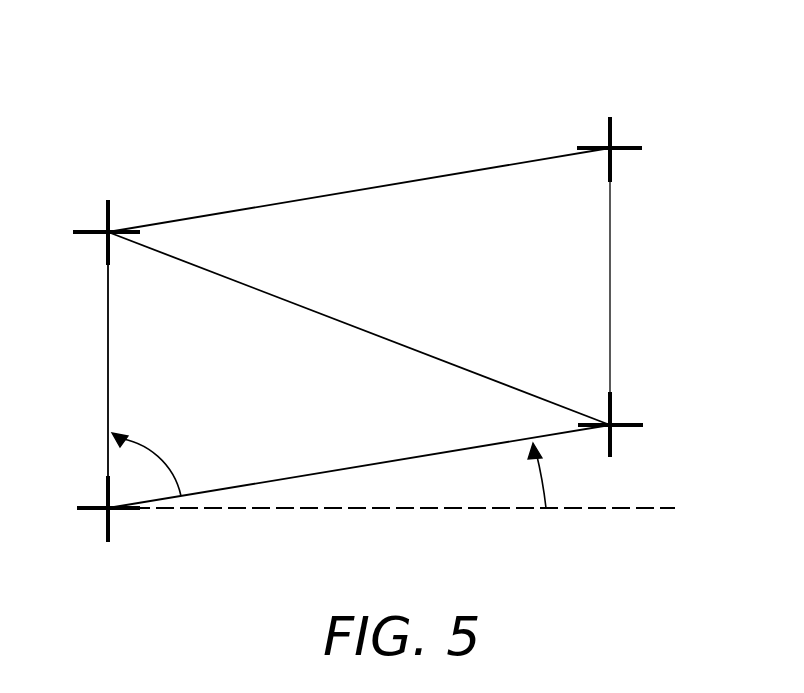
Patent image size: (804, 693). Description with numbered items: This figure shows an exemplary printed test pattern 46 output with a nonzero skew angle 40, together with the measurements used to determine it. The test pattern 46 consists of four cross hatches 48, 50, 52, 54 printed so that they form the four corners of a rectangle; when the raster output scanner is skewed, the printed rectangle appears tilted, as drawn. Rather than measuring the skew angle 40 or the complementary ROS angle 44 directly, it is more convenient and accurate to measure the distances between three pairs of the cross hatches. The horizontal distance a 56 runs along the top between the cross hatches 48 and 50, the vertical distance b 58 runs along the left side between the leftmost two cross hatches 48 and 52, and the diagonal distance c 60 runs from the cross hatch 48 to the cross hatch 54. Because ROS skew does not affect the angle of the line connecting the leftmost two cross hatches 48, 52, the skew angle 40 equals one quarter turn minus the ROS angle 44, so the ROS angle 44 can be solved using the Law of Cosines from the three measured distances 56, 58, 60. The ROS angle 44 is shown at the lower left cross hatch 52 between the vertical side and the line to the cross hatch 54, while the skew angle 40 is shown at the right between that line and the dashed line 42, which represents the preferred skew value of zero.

The skew angle 40 is at (545, 492).
The dashed line 42 is at (662, 507).
The ROS angle 44 is at (178, 478).
The test pattern 46 is at (435, 158).
The cross hatch 48 is at (105, 227).
The cross hatch 50 is at (612, 128).
The cross hatch 52 is at (105, 523).
The cross hatch 54 is at (612, 400).
The distance a 56 is at (245, 207).
The distance b 58 is at (108, 382).
The distance c 60 is at (320, 313).